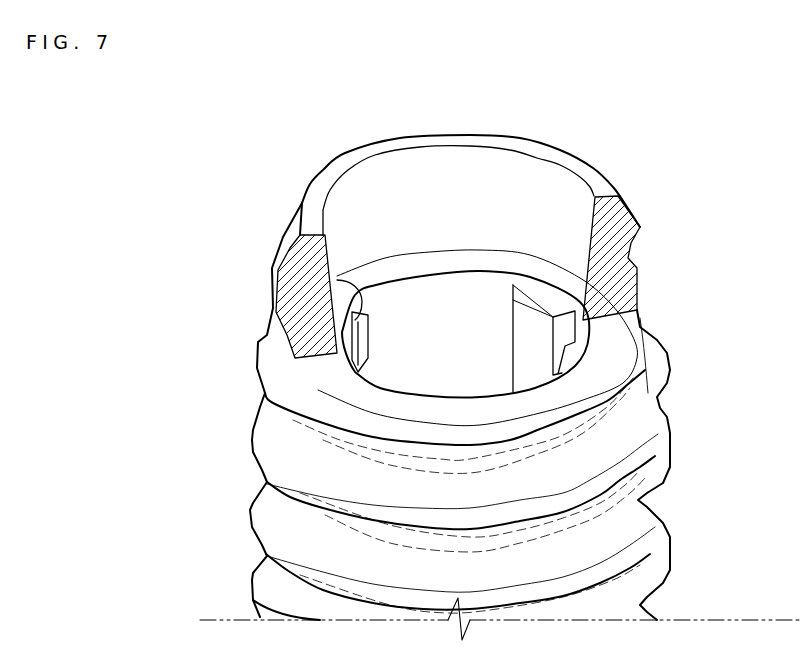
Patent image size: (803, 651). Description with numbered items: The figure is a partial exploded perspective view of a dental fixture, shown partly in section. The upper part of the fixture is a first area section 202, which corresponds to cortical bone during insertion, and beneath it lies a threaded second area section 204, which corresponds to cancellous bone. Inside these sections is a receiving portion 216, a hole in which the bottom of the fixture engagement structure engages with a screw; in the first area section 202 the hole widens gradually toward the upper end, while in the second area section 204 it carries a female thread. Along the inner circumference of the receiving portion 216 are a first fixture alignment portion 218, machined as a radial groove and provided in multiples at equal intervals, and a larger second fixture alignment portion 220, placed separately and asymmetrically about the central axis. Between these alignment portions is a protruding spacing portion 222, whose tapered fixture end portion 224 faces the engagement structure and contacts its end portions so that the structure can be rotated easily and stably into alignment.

The first area section 202 is at (452, 261).
The second area section 204 is at (698, 362).
The receiving portion 216 is at (415, 180).
The first fixture alignment portion 218 is at (557, 275).
The second fixture alignment portion 220 is at (465, 300).
The spacing portion 222 is at (380, 345).
The fixture end portion 224 is at (355, 312).